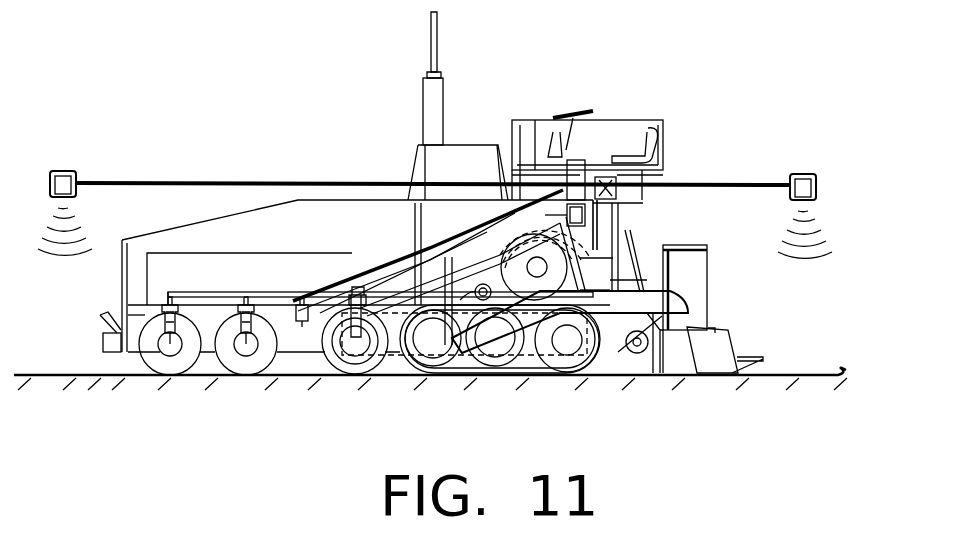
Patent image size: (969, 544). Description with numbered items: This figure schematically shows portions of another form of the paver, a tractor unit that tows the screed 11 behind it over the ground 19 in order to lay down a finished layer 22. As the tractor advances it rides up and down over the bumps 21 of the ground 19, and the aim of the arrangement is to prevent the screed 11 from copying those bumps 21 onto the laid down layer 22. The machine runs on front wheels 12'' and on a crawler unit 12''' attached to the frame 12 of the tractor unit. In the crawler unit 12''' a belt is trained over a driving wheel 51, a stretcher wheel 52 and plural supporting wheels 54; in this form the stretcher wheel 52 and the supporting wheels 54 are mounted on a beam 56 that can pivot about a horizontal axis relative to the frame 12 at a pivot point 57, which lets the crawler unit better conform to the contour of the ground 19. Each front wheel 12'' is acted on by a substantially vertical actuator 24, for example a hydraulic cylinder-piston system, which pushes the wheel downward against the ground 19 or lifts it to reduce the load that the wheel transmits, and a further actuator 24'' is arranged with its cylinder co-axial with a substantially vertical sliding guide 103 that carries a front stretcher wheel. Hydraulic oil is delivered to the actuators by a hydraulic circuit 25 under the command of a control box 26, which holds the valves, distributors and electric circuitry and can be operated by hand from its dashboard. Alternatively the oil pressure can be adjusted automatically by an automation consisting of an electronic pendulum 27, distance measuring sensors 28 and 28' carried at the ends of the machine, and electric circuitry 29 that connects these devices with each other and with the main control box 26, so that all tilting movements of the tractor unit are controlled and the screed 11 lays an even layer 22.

The screed 11 is at (713, 353).
The frame 12 is at (83, 324).
The front wheel 12'' is at (218, 361).
The crawler unit 12''' is at (471, 365).
The ground 19 is at (92, 380).
The bumps 21 is at (643, 372).
The laid down layer 22 is at (852, 372).
The actuator 24 is at (149, 361).
The actuator 24'' is at (325, 277).
The hydraulic circuit 25 is at (414, 246).
The control box 26 is at (571, 115).
The electronic pendulum 27 is at (604, 177).
The distance measuring sensor 28 is at (805, 191).
The distance measuring sensor 28' is at (60, 189).
The electric circuitry 29 is at (104, 181).
The driving wheel 51 is at (476, 228).
The stretcher wheel 52 is at (365, 358).
The supporting wheels 54 is at (434, 348).
The beam 56 is at (348, 302).
The pivot point 57 is at (412, 340).
The sliding guide 103 is at (330, 300).